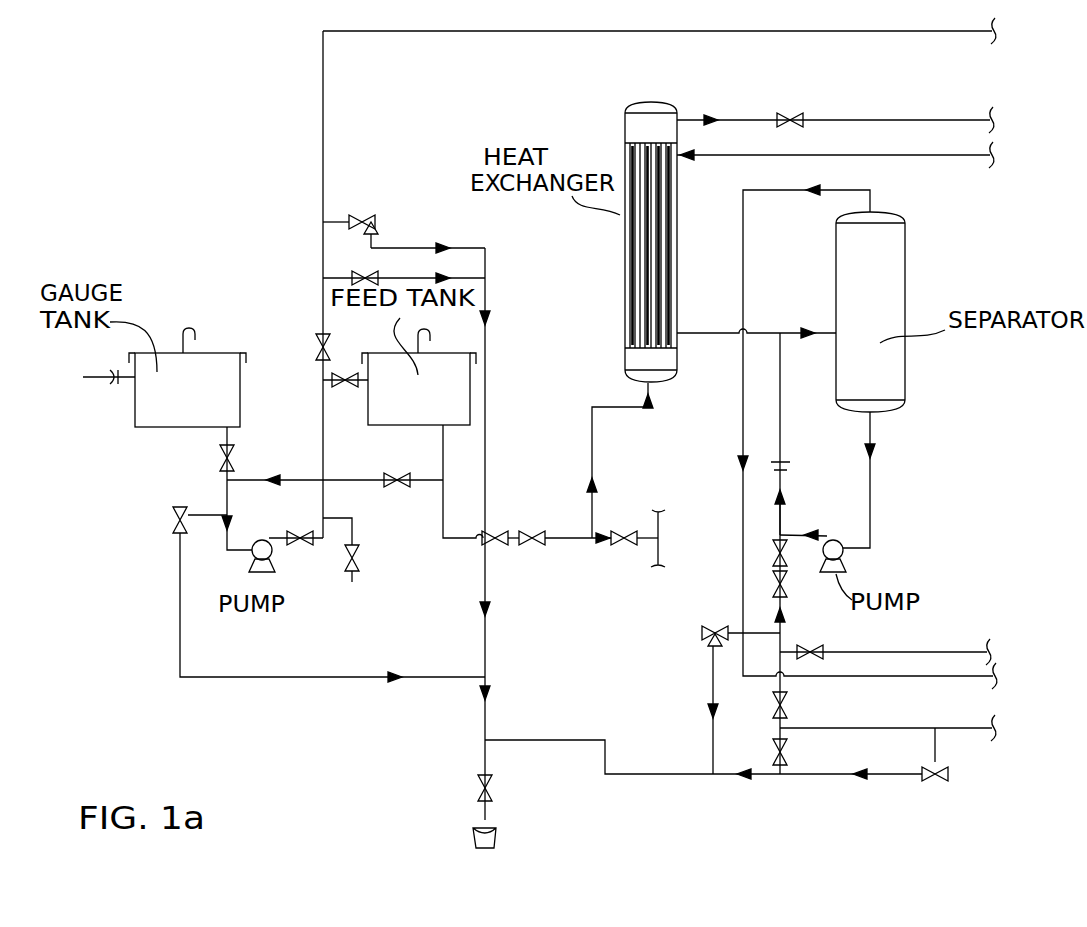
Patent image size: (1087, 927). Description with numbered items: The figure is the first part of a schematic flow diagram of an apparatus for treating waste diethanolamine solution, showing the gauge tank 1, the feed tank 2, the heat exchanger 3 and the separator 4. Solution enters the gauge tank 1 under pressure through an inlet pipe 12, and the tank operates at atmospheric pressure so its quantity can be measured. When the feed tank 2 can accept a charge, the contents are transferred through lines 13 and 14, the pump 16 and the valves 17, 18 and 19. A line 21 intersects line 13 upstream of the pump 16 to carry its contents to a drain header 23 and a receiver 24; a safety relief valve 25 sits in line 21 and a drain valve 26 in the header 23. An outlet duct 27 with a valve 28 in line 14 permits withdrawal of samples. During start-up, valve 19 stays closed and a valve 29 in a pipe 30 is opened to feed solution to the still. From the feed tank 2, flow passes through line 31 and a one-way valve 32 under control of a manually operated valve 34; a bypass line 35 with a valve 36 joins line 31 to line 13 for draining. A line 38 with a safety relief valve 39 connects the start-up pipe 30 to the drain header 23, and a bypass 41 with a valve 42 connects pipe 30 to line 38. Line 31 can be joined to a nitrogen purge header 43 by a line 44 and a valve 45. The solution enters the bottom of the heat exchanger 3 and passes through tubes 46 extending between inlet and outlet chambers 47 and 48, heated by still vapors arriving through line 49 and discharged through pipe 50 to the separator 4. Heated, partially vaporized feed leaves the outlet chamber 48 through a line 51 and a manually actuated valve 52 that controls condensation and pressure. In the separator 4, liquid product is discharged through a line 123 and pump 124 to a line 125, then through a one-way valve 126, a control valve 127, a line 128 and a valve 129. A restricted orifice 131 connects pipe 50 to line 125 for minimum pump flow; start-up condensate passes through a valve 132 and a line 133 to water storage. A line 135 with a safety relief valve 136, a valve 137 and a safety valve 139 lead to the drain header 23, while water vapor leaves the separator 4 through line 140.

The gauge tank 1 is at (135, 425).
The feed tank 2 is at (432, 403).
The heat exchanger 3 is at (620, 303).
The separator 4 is at (875, 258).
The inlet pipe 12 is at (112, 383).
The line 13 is at (222, 500).
The line 14 is at (320, 440).
The pump 16 is at (272, 575).
The valve 17 is at (220, 458).
The valve 18 is at (298, 528).
The valve 19 is at (338, 388).
The line 21 is at (210, 680).
The drain header 23 is at (580, 740).
The receiver 24 is at (473, 841).
The safety relief valve 25 is at (173, 518).
The drain valve 26 is at (493, 798).
The outlet duct 27 is at (350, 530).
The valve 28 is at (360, 568).
The valve 29 is at (316, 347).
The pipe 30 is at (323, 92).
The line 31 is at (443, 540).
The one-way valve 32 is at (498, 531).
The manually operated valve 34 is at (535, 546).
The bypass line 35 is at (340, 481).
The valve 36 is at (397, 488).
The line 38 is at (488, 300).
The safety relief valve 39 is at (373, 220).
The bypass 41 is at (418, 278).
The valve 42 is at (355, 275).
The nitrogen purge header 43 is at (662, 550).
The line 44 is at (643, 532).
The valve 45 is at (623, 546).
The tubes 46 is at (640, 255).
The inlet chamber 47 is at (630, 364).
The outlet chamber 48 is at (625, 130).
The line 49 is at (960, 155).
The pipe 50 is at (700, 333).
The line 51 is at (940, 120).
The valve 52 is at (786, 113).
The line 123 is at (875, 510).
The pump 124 is at (850, 565).
The line 125 is at (782, 532).
The one-way valve 126 is at (772, 553).
The control valve 127 is at (787, 584).
The line 128 is at (986, 650).
The valve 129 is at (822, 648).
The restricted orifice 131 is at (790, 463).
The valve 132 is at (790, 705).
The line 133 is at (985, 728).
The line 135 is at (713, 690).
The safety relief valve 136 is at (704, 634).
The valve 137 is at (787, 766).
The safety valve 139 is at (940, 784).
The line 140 is at (778, 190).